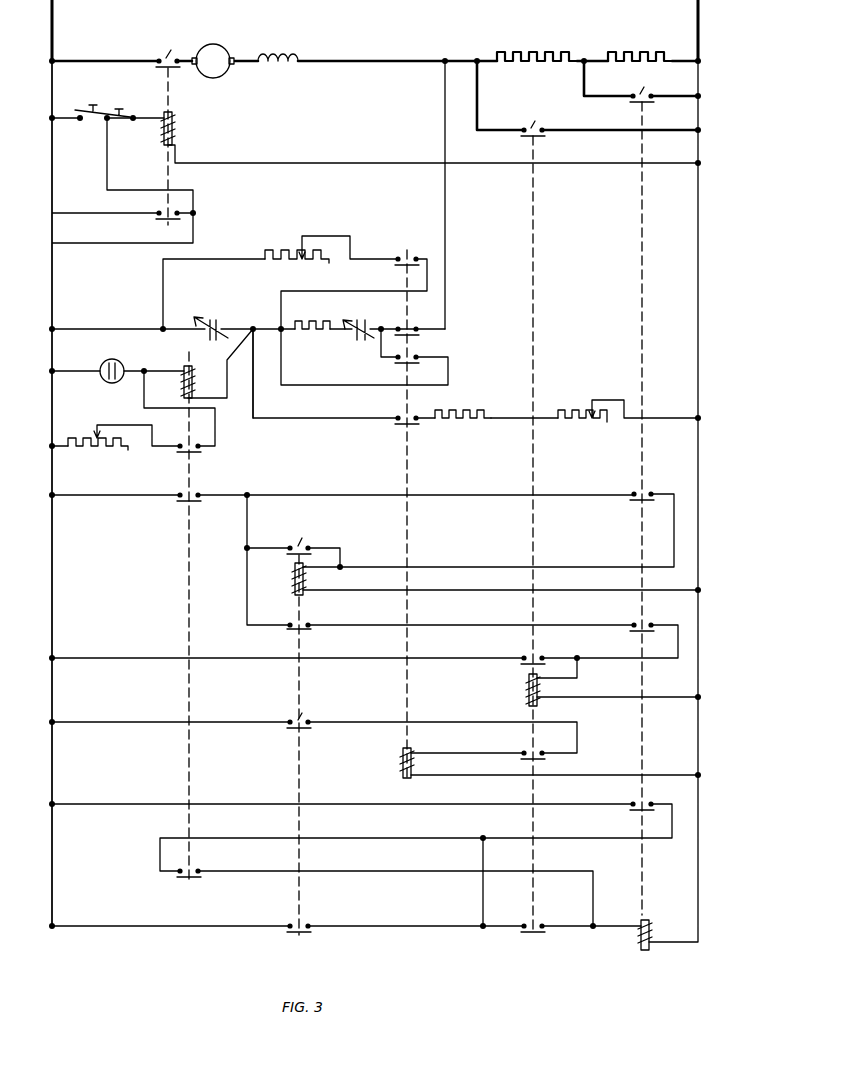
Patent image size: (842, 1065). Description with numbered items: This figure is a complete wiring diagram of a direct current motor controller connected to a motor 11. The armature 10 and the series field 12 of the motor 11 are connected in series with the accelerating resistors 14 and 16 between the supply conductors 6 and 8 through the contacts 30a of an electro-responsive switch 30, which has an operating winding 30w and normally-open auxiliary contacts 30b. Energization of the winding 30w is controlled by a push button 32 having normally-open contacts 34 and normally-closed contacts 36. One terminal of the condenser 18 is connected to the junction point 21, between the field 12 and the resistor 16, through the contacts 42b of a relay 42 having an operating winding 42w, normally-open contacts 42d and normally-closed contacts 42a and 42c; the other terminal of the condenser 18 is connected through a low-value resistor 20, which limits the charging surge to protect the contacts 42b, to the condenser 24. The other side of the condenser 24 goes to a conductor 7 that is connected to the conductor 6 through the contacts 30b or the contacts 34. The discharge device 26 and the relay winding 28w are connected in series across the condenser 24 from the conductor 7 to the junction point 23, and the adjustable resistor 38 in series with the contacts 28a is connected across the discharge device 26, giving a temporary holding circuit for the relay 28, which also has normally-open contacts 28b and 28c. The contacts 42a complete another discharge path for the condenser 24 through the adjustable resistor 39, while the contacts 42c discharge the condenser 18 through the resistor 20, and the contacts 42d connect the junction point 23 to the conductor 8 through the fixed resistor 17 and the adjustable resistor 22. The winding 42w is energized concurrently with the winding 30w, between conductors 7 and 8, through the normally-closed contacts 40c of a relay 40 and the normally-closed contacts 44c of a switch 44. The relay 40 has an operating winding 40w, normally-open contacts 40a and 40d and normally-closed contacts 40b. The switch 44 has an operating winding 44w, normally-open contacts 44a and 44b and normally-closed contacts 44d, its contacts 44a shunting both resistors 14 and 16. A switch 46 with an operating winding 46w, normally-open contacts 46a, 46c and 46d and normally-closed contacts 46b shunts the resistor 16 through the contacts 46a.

The conductor 6 is at (52, 38).
The conductor 8 is at (698, 44).
The conductor 7 is at (58, 254).
The armature 10 is at (214, 44).
The motor 11 is at (251, 37).
The field 12 is at (277, 65).
The resistor 14 is at (526, 52).
The accelerating resistor 16 is at (639, 52).
The fixed resistor 17 is at (469, 424).
The condenser 18 is at (358, 340).
The resistor 20 is at (313, 334).
The junction point 21 is at (444, 60).
The adjustable resistor 22 is at (589, 425).
The junction point 23 is at (253, 327).
The condenser 24 is at (225, 318).
The discharge device 26 is at (104, 362).
The relay 28 is at (188, 586).
The contacts 28a is at (179, 438).
The contacts 28b is at (184, 492).
The contacts 28c is at (193, 870).
The relay winding 28w is at (192, 378).
The electro-responsive switch 30 is at (168, 88).
The contacts 30a is at (157, 52).
The auxiliary contacts 30b is at (162, 219).
The operating winding 30w is at (173, 133).
The push button 32 is at (115, 103).
The contacts 34 is at (82, 121).
The contacts 36 is at (135, 121).
The adjustable resistor 38 is at (93, 453).
The adjustable resistor 39 is at (270, 263).
The electro-responsive relay 40 is at (299, 764).
The contacts 40a is at (300, 538).
The contacts 40b is at (312, 615).
The contacts 40c is at (308, 713).
The contacts 40d is at (305, 925).
The operating winding 40w is at (293, 580).
The electro-responsive relay 42 is at (410, 405).
The contacts 42a is at (405, 255).
The contacts 42b is at (406, 325).
The contacts 42c is at (418, 356).
The contacts 42d is at (401, 422).
The operating winding 42w is at (400, 768).
The electro-responsive switch 44 is at (533, 255).
The contacts 44a is at (528, 121).
The contacts 44b is at (534, 657).
The contacts 44c is at (528, 752).
The contacts 44d is at (526, 925).
The operating winding 44w is at (527, 692).
The electro-responsive switch 46 is at (642, 255).
The contacts 46a is at (636, 87).
The contacts 46b is at (646, 493).
The contacts 46c is at (639, 623).
The contacts 46d is at (636, 803).
The operating winding 46w is at (651, 928).